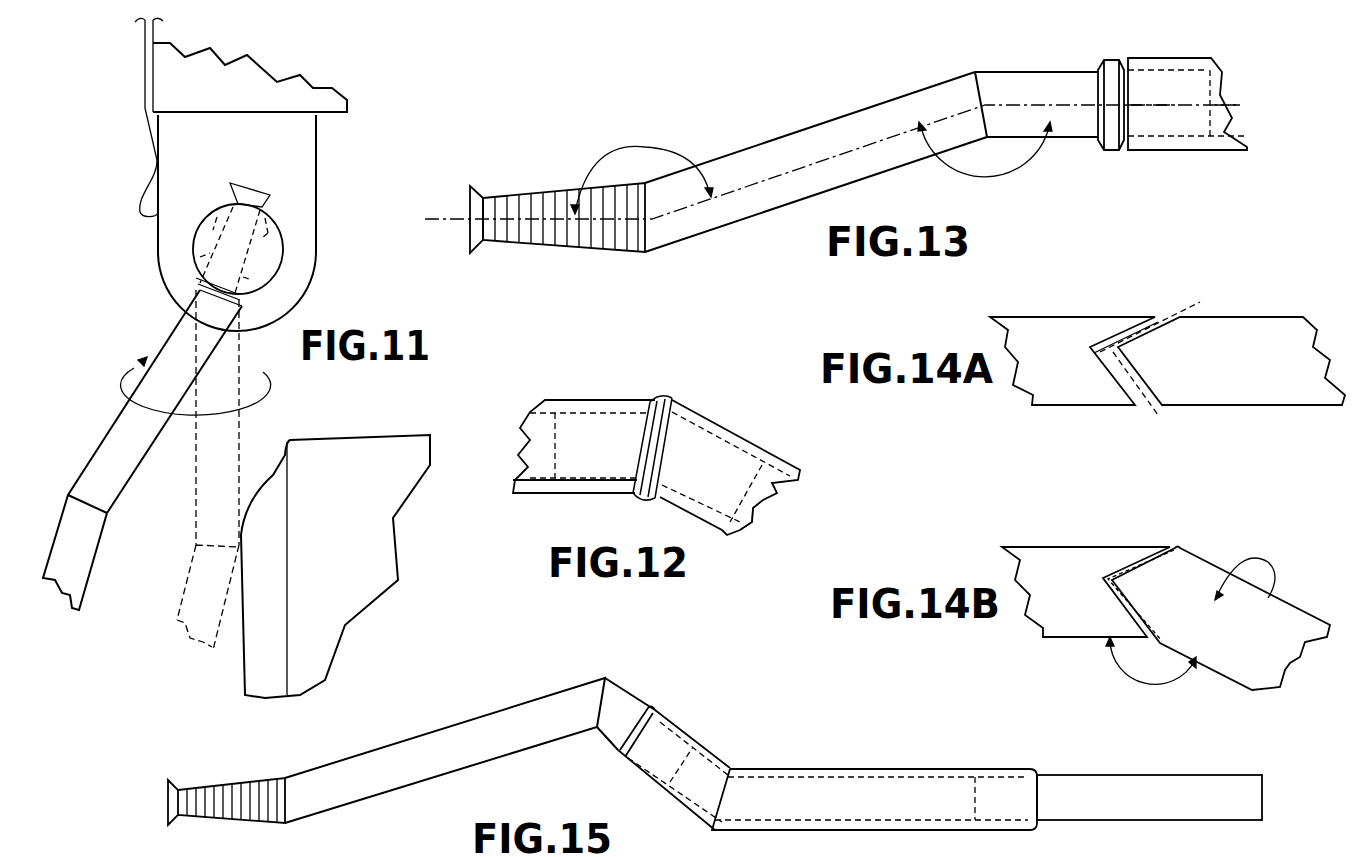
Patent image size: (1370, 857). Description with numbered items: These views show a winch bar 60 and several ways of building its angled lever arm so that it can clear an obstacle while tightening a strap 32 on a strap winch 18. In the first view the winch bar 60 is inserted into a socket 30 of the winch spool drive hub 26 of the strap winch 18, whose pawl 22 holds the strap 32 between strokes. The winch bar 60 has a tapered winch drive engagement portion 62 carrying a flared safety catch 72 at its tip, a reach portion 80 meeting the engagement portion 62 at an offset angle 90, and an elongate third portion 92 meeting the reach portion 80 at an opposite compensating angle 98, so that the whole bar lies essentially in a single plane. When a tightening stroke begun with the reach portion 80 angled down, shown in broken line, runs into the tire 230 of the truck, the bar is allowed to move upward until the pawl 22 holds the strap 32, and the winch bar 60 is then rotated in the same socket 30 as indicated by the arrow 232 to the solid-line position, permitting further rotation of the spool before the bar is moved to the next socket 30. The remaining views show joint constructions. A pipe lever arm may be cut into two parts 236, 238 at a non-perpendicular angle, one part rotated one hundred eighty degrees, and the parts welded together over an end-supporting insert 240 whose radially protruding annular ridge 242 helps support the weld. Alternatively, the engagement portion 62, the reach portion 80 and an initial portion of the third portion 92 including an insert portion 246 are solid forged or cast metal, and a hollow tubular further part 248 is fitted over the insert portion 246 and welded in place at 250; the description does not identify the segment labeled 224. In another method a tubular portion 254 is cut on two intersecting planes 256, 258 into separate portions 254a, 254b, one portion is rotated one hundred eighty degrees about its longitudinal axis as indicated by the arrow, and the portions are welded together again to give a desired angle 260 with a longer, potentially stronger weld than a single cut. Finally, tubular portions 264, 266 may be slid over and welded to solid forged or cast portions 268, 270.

In FIG. 11, the strap winch 18 is at (318, 172).
In FIG. 11, the pawl 22 is at (140, 212).
In FIG. 11, the winch bar receiver 26 is at (283, 266).
In FIG. 11, the winch bar socket 30 is at (193, 240).
In FIG. 11, the strap 32 is at (145, 67).
In FIG. 11, the winch bar 60 is at (150, 333).
In FIG. 13, the winch bar 60 is at (748, 118).
In FIG. 13, the winch drive engagement portion 62 is at (540, 196).
In FIG. 13, the safety catch 72 is at (478, 190).
In FIG. 11, the reach portion 80 is at (126, 405).
In FIG. 13, the reach portion 80 is at (806, 126).
In FIG. 13, the offset angle 90 is at (647, 147).
In FIG. 11, the elongate third portion 92 is at (192, 551).
In FIG. 13, the elongate third portion 92 is at (1220, 156).
In FIG. 13, the compensating angle 98 is at (998, 172).
In FIG. 13, the extension 224 is at (1036, 72).
In FIG. 11, the tire 230 is at (365, 436).
In FIG. 11, the arrow 232 is at (142, 362).
In FIG. 12, the pipe part 236 is at (590, 400).
In FIG. 12, the pipe part 238 is at (750, 445).
In FIG. 12, the end-supporting insert 240 is at (758, 510).
In FIG. 12, the annular ridge 242 is at (665, 397).
In FIG. 13, the insert portion 246 is at (1240, 106).
In FIG. 13, the further part 248 is at (1163, 151).
In FIG. 13, the weld 250 is at (1122, 59).
In FIG. 14A, the tubular portion 254 is at (1167, 363).
In FIG. 14A, the first tubular portion 254a is at (1078, 406).
In FIG. 14B, the first tubular portion 254a is at (1088, 547).
In FIG. 14A, the second tubular portion 254b is at (1253, 406).
In FIG. 14B, the second tubular portion 254b is at (1303, 612).
In FIG. 14A, the cutting plane 256 is at (1181, 310).
In FIG. 14A, the cutting plane 258 is at (1148, 414).
In FIG. 14B, the desired angle 260 is at (1140, 682).
In FIG. 15, the tubular portion 264 is at (699, 740).
In FIG. 15, the tubular portion 266 is at (882, 769).
In FIG. 15, the solid forged or cast portion 268 is at (434, 728).
In FIG. 15, the solid forged or cast portion 270 is at (1151, 775).